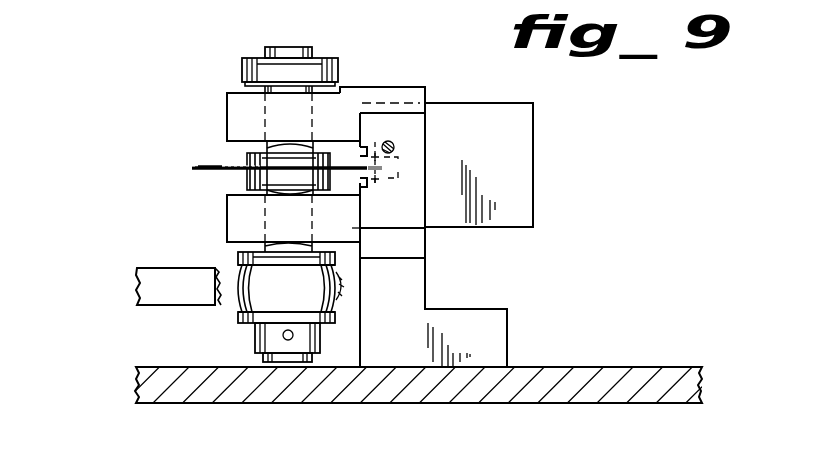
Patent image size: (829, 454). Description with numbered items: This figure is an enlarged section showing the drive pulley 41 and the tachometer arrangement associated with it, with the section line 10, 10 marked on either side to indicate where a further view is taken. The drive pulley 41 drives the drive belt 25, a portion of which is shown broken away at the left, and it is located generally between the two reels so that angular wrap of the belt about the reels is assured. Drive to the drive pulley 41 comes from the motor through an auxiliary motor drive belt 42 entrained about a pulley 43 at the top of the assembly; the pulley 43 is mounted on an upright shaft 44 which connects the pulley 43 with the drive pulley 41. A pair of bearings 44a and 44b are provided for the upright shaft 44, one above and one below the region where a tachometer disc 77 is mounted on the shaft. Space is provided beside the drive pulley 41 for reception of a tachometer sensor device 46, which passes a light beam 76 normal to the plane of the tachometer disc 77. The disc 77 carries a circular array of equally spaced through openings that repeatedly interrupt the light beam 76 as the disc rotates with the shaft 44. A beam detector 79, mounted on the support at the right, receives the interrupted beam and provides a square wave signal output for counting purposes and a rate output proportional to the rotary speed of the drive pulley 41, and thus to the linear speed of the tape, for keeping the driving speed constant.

The section line 10- 10 is at (140, 150).
The drive belt 25 is at (158, 276).
The drive pulley 41 is at (290, 298).
The auxiliary motor drive belt 42 is at (242, 71).
The pulley 43 is at (250, 57).
The upright shaft 44 is at (283, 47).
The bearing 44a is at (227, 107).
The bearing 44b is at (227, 214).
The tachometer sensor device 46 is at (188, 169).
The light beam 76 is at (383, 192).
The tachometer disc 77 is at (212, 166).
The beam detector 79 is at (535, 204).